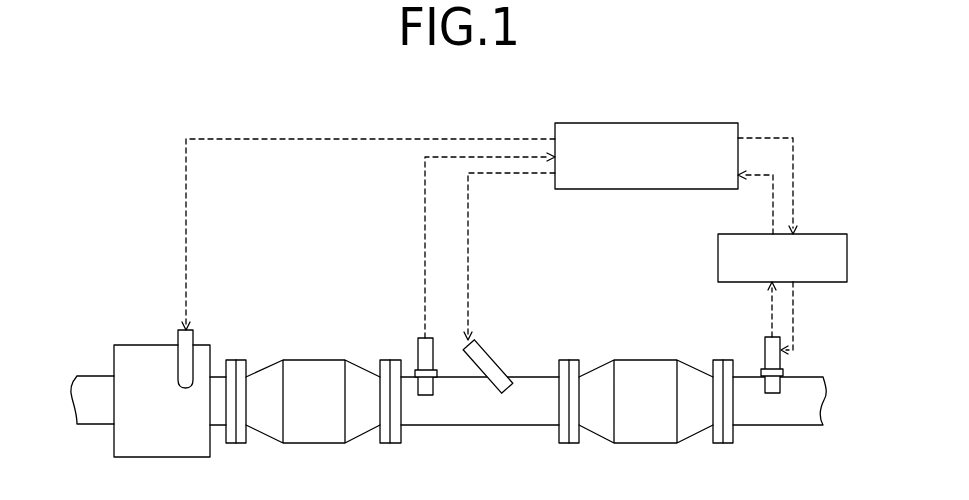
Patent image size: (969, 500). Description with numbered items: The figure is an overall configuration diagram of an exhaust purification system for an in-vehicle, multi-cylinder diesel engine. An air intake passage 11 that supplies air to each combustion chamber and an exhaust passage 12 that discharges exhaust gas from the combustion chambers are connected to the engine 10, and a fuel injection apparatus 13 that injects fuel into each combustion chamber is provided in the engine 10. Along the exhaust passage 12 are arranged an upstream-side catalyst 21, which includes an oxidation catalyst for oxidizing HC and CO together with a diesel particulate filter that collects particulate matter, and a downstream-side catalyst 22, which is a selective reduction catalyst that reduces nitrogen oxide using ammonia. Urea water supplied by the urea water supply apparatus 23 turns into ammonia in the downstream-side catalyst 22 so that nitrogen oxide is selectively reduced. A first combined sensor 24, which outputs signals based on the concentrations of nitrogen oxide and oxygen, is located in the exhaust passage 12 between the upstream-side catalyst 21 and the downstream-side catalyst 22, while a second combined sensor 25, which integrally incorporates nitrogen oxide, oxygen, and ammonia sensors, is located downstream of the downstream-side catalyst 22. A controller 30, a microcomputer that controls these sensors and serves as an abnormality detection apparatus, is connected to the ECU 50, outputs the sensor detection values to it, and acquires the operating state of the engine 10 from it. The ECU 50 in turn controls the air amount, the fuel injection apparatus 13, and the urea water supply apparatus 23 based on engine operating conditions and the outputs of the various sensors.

The engine 10 is at (180, 457).
The air intake passage 11 is at (88, 376).
The exhaust passage 12 is at (226, 358).
The fuel injection apparatus 13 is at (178, 333).
The upstream-side catalyst 21 is at (316, 360).
The downstream-side catalyst 22 is at (656, 360).
The urea water supply apparatus 23 is at (489, 354).
The first combined sensor 24 is at (417, 342).
The second combined sensor 25 is at (765, 343).
The controller 30 is at (835, 234).
The ECU 50 is at (705, 123).